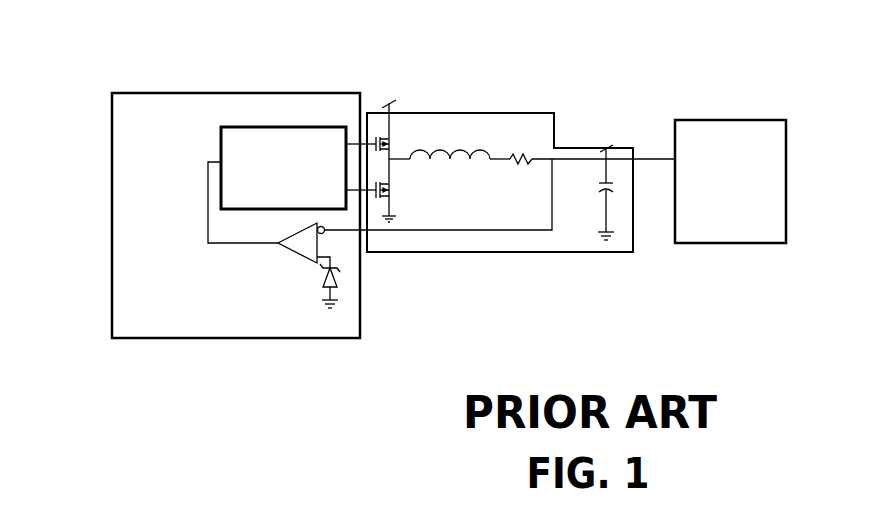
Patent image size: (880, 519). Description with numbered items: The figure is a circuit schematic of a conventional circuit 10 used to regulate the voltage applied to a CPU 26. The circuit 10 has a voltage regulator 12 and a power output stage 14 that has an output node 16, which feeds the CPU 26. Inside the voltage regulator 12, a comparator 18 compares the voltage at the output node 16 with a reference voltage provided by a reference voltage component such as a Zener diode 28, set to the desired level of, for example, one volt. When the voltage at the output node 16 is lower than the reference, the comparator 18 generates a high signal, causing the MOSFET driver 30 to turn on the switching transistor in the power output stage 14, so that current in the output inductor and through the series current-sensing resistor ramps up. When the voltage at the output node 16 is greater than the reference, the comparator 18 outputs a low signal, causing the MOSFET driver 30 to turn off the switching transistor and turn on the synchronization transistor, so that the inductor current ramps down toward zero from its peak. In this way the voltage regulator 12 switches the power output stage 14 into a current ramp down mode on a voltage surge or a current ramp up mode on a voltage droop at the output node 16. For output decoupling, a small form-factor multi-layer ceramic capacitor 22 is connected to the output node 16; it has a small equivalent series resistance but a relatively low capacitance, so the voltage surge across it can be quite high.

The circuit 10 is at (467, 48).
The voltage regulator 12 is at (211, 93).
The power output stage 14 is at (488, 113).
The output node 16 is at (642, 153).
The comparator 18 is at (292, 249).
The multi-layer ceramic capacitor 22 is at (579, 212).
The CPU 26 is at (786, 198).
The Zener diode 28 is at (342, 283).
The MOSFET driver 30 is at (221, 149).